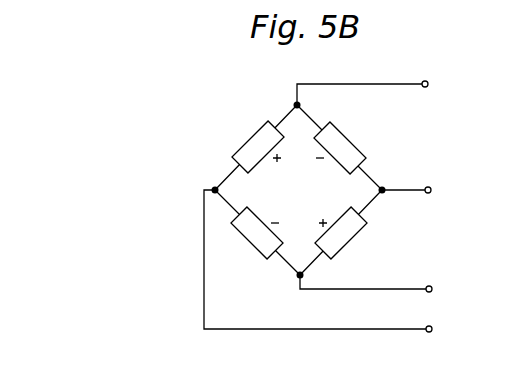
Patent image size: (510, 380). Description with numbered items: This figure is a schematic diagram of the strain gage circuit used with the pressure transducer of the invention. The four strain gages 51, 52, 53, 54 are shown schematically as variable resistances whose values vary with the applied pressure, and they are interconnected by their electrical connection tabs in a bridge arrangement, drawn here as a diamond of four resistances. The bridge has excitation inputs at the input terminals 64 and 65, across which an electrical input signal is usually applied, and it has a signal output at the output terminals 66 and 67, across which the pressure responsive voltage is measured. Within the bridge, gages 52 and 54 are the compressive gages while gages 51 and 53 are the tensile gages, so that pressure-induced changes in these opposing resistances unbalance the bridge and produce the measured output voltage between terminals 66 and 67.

The strain gage 51 is at (246, 141).
The strain gage 52 is at (246, 248).
The strain gage 53 is at (355, 233).
The strain gage 54 is at (354, 137).
The excitation input terminal 64 is at (425, 80).
The excitation input terminal 65 is at (429, 286).
The signal output terminal 66 is at (428, 186).
The signal output terminal 67 is at (429, 332).